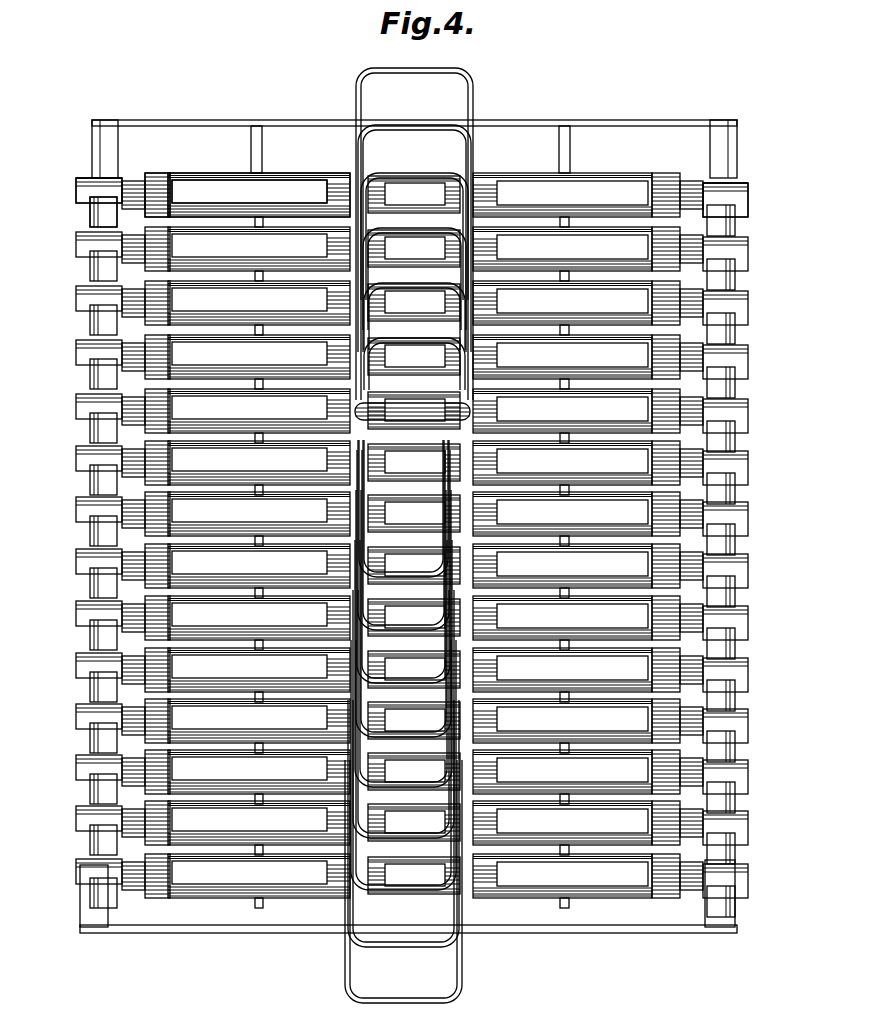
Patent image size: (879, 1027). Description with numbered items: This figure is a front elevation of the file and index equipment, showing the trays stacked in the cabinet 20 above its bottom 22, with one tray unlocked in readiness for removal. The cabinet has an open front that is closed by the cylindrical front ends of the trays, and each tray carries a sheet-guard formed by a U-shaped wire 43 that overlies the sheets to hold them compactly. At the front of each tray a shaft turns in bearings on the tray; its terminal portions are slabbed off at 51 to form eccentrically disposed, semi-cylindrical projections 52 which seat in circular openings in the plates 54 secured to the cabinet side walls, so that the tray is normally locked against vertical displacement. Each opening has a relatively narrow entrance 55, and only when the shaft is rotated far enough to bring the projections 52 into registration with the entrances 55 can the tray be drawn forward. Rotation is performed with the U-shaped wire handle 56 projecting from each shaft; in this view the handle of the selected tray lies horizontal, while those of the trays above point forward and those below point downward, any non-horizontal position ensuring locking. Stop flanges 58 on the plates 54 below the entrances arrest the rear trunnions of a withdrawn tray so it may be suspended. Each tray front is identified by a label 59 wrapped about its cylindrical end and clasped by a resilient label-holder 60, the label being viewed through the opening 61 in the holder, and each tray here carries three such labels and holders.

The cabinet 20 is at (527, 126).
The bottom 22 is at (540, 933).
The wire 43 is at (253, 136).
The slabbed-off terminal portion 51 is at (88, 194).
The eccentrically-disposed projection 52 is at (748, 200).
The plate 54 is at (92, 147).
The entrance 55 is at (95, 178).
The handle 56 is at (470, 96).
The flange 58 is at (90, 214).
The label 59 is at (296, 186).
The label-holder 60 is at (155, 175).
The roller body 61 is at (212, 180).